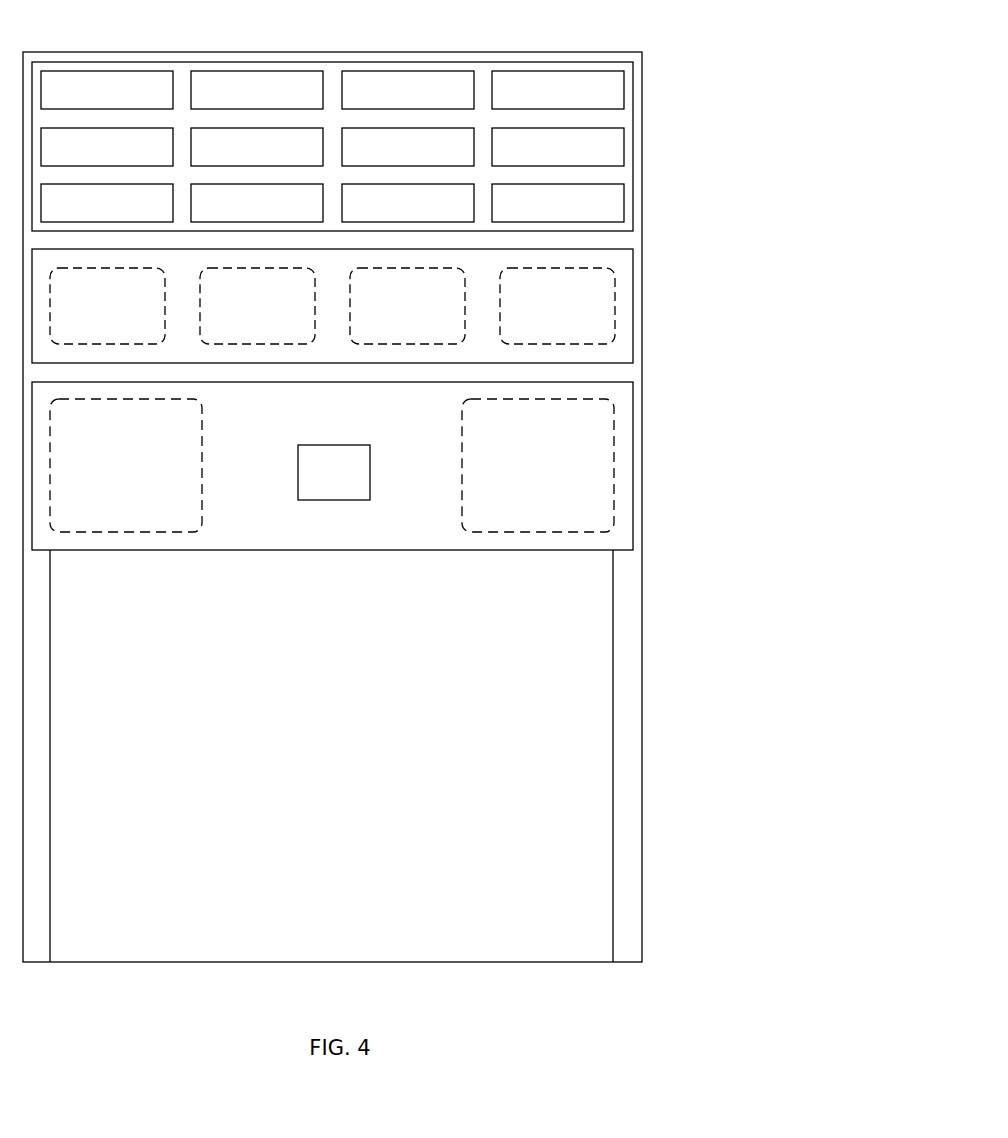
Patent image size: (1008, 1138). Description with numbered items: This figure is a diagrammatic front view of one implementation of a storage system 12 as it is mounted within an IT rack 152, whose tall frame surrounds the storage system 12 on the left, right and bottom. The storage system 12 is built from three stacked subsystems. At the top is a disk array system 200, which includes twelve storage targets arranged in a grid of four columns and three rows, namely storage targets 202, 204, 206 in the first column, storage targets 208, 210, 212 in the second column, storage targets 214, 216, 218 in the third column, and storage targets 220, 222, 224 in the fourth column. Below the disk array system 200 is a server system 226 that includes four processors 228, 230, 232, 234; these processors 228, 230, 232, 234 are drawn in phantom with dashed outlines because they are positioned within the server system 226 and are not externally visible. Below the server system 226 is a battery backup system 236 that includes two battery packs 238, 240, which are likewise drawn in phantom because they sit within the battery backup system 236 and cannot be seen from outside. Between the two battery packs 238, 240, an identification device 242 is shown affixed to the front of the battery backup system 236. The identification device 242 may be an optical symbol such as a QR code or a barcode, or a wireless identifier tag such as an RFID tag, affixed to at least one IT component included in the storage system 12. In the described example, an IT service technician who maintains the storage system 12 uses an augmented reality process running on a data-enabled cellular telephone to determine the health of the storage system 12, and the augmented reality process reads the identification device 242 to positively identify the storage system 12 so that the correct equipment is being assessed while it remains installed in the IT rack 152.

The storage system 12 is at (48, 34).
The IT rack 152 is at (643, 689).
The disk array system 200 is at (634, 82).
The storage target 202 is at (107, 90).
The storage target 204 is at (107, 147).
The storage target 206 is at (107, 203).
The storage target 208 is at (257, 90).
The storage target 210 is at (257, 147).
The storage target 212 is at (257, 203).
The storage target 214 is at (408, 90).
The storage target 216 is at (408, 147).
The storage target 218 is at (408, 203).
The storage target 220 is at (558, 90).
The storage target 222 is at (558, 147).
The storage target 224 is at (558, 203).
The server system 226 is at (634, 268).
The processor 228 is at (107, 306).
The processor 230 is at (257, 306).
The processor 232 is at (407, 306).
The processor 234 is at (557, 306).
The battery backup system 236 is at (634, 400).
The battery pack 238 is at (126, 465).
The battery pack 240 is at (538, 465).
The identification device 242 is at (334, 472).